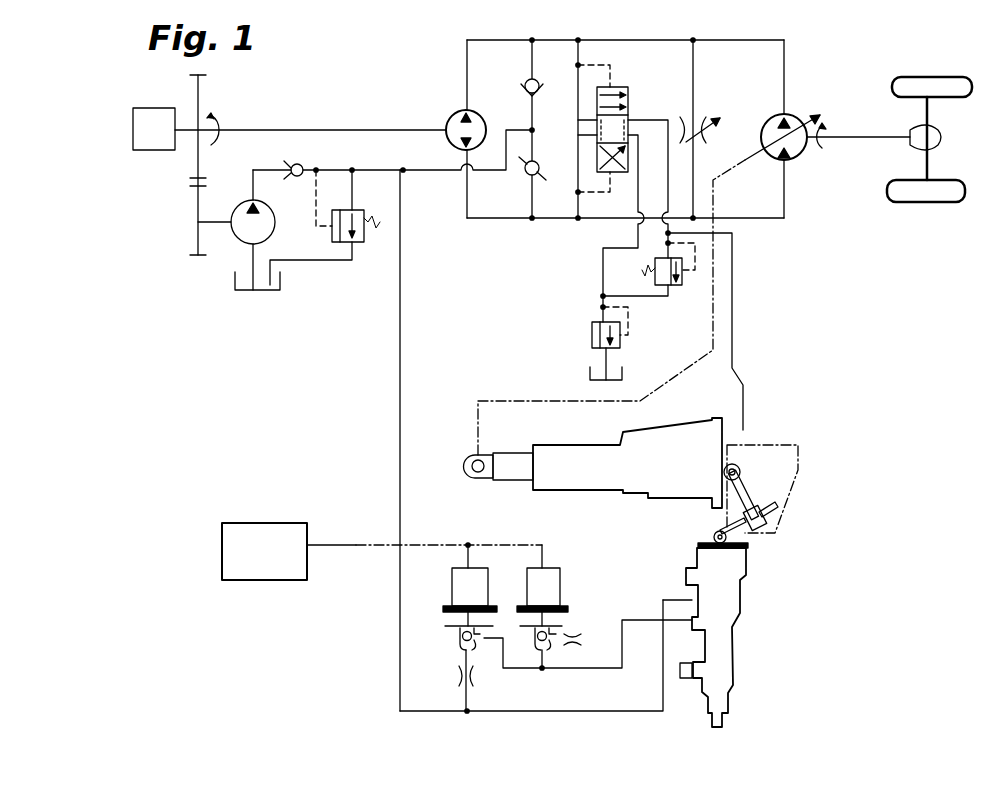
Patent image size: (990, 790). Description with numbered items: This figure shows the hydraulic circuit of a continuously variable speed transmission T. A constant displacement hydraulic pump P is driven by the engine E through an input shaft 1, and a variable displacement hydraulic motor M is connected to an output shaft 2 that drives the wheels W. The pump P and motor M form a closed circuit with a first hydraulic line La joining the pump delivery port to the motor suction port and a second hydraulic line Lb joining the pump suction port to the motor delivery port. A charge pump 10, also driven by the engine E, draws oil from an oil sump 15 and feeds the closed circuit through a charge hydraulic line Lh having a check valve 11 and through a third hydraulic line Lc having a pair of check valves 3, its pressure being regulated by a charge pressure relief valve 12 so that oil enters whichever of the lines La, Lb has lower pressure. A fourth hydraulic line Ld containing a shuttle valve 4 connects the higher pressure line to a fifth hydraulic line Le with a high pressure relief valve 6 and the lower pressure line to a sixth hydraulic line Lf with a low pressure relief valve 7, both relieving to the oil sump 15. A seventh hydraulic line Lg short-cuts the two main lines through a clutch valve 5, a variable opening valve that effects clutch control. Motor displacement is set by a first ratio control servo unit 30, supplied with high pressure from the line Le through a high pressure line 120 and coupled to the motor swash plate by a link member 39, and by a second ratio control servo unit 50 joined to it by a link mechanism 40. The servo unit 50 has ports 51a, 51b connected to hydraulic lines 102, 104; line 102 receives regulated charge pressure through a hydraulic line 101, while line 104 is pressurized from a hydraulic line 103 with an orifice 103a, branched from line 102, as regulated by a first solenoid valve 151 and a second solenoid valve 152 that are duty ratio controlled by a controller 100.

The input shaft 1 is at (362, 130).
The output shaft 2 is at (870, 137).
The check valve 3 is at (526, 80).
The shuttle valve 4 is at (628, 90).
The clutch valve 5 is at (708, 138).
The high pressure relief valve 6 is at (684, 280).
The low pressure relief valve 7 is at (621, 342).
The charge pump 10 is at (270, 236).
The check valve 11 is at (294, 177).
The charge pressure relief valve 12 is at (348, 210).
The oil sump 15 is at (282, 283).
The first ratio control servo unit 30 is at (608, 494).
The link member 39 is at (715, 292).
The link mechanism 40 is at (757, 494).
The second ratio control servo unit 50 is at (689, 555).
The port 51a is at (686, 590).
The port 51b is at (686, 627).
The controller 100 is at (285, 523).
The hydraulic line 101 is at (402, 272).
The hydraulic line 102 is at (600, 712).
The hydraulic line 103 is at (462, 688).
The orifice 103a is at (472, 678).
The hydraulic line 104 is at (590, 668).
The high pressure line 120 is at (733, 328).
The first solenoid valve 151 is at (488, 592).
The second solenoid valve 152 is at (560, 592).
The engine E is at (133, 130).
The hydraulic pump P is at (448, 116).
The hydraulic motor M is at (794, 114).
The continuously variable speed transmission T is at (760, 32).
The wheels W is at (944, 70).
The first hydraulic line La is at (497, 218).
The second hydraulic line Lb is at (506, 40).
The third hydraulic line Lc is at (536, 118).
The fourth hydraulic line Ld is at (580, 50).
The fifth hydraulic line Le is at (658, 118).
The sixth hydraulic line Lf is at (604, 262).
The seventh hydraulic line Lg is at (698, 74).
The charge hydraulic line Lh is at (440, 175).